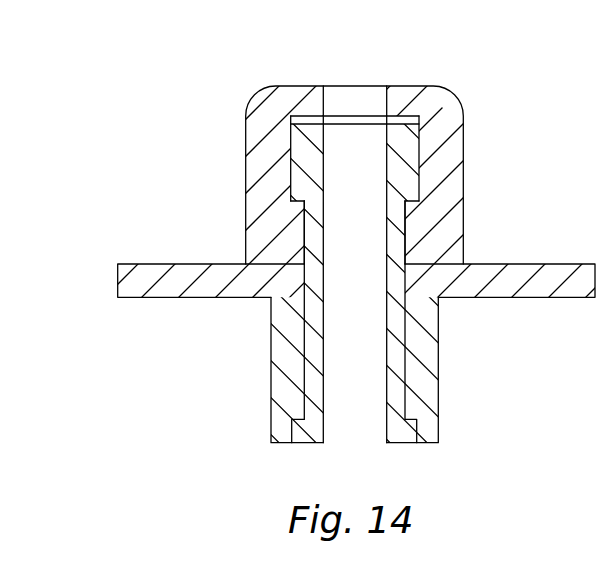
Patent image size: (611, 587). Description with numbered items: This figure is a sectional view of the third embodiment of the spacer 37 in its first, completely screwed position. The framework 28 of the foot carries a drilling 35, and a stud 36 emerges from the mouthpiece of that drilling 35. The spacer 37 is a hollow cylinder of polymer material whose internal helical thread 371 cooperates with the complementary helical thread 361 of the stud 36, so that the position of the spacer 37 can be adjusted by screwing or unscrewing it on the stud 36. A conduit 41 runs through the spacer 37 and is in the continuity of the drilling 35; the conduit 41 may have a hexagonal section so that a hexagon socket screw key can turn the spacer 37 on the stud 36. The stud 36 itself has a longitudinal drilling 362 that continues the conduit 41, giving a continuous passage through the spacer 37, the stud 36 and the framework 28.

The framework 28 is at (173, 318).
The drilling 35 is at (270, 350).
The stud 36 is at (393, 313).
The spacer 37 is at (428, 133).
The conduit 41 is at (362, 102).
The helical thread of the stud 361 is at (300, 196).
The internal helical thread 371 is at (297, 225).
The longitudinal drilling 362 is at (330, 427).